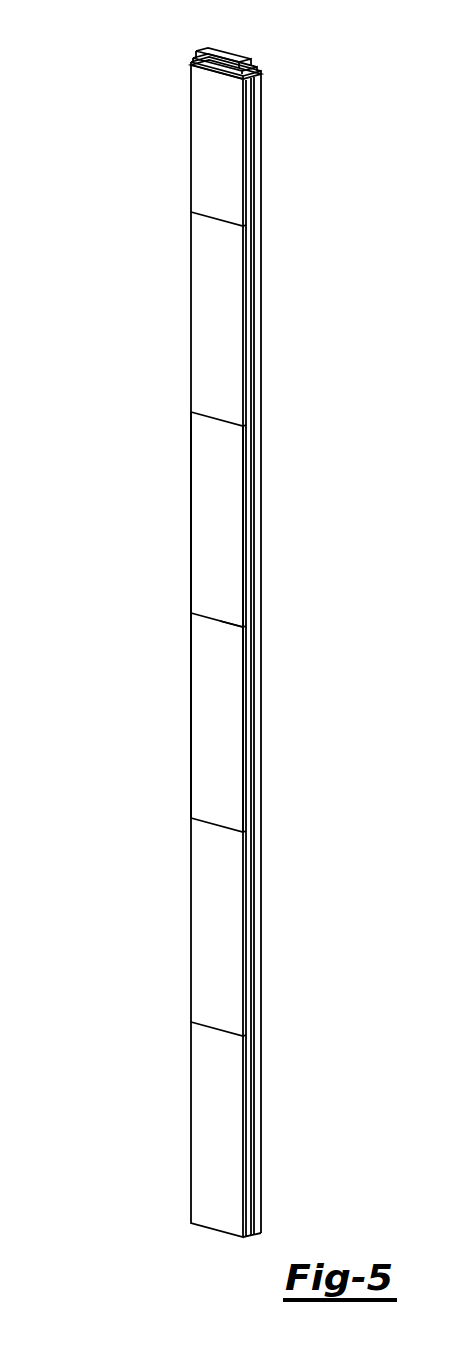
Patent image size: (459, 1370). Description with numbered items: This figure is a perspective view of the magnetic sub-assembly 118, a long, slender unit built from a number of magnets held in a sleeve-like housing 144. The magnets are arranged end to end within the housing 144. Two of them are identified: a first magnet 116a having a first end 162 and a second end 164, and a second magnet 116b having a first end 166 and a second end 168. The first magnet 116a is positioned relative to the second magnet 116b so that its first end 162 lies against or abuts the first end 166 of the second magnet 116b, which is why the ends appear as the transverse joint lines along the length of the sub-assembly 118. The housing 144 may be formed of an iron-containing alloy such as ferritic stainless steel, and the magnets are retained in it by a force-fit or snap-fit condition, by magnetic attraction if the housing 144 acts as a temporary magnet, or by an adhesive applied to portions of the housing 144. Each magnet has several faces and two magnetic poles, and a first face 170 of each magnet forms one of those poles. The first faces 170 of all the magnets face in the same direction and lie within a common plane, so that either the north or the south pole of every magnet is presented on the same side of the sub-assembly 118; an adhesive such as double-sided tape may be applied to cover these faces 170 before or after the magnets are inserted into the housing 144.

The magnetic sub-assembly 118 is at (128, 63).
The housing 144 is at (261, 317).
The second end of second magnet 168 is at (217, 419).
The first end of first magnet 162 is at (216, 620).
The first end of second magnet 166 is at (223, 623).
The second end of first magnet 164 is at (217, 825).
The second magnet 116b is at (228, 480).
The first magnet 116a is at (212, 680).
The first face 170 is at (212, 478).